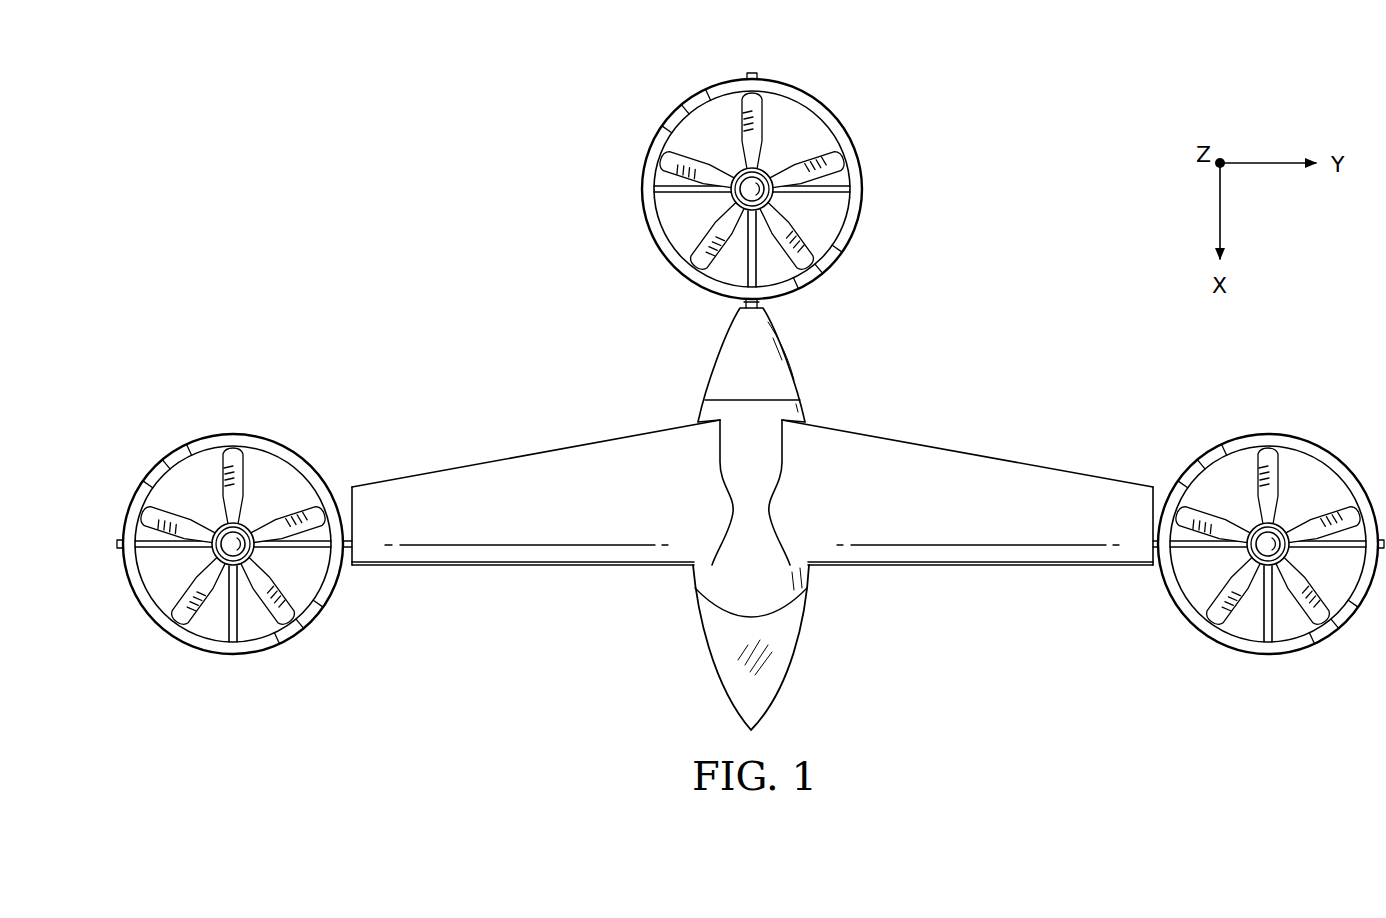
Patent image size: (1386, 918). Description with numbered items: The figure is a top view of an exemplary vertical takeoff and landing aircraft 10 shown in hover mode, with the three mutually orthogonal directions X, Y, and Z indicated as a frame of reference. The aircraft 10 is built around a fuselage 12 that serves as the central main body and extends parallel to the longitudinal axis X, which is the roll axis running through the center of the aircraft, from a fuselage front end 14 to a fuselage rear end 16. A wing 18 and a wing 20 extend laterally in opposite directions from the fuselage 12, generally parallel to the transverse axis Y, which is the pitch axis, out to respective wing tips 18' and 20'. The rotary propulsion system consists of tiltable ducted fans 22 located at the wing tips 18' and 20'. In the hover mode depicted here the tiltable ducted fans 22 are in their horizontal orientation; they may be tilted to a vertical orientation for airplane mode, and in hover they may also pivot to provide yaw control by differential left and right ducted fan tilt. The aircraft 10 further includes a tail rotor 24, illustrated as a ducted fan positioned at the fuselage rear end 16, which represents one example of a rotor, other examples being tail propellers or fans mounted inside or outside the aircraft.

The aircraft 10 is at (430, 243).
The fuselage 12 is at (708, 408).
The fuselage front end 14 is at (788, 687).
The fuselage rear end 16 is at (718, 346).
The wing 18 is at (976, 480).
The wing tip 18' is at (1150, 491).
The wing 20 is at (530, 480).
The wing tip 20' is at (360, 491).
The tiltable ducted fan 22 is at (175, 423).
The tail rotor 24 is at (691, 68).